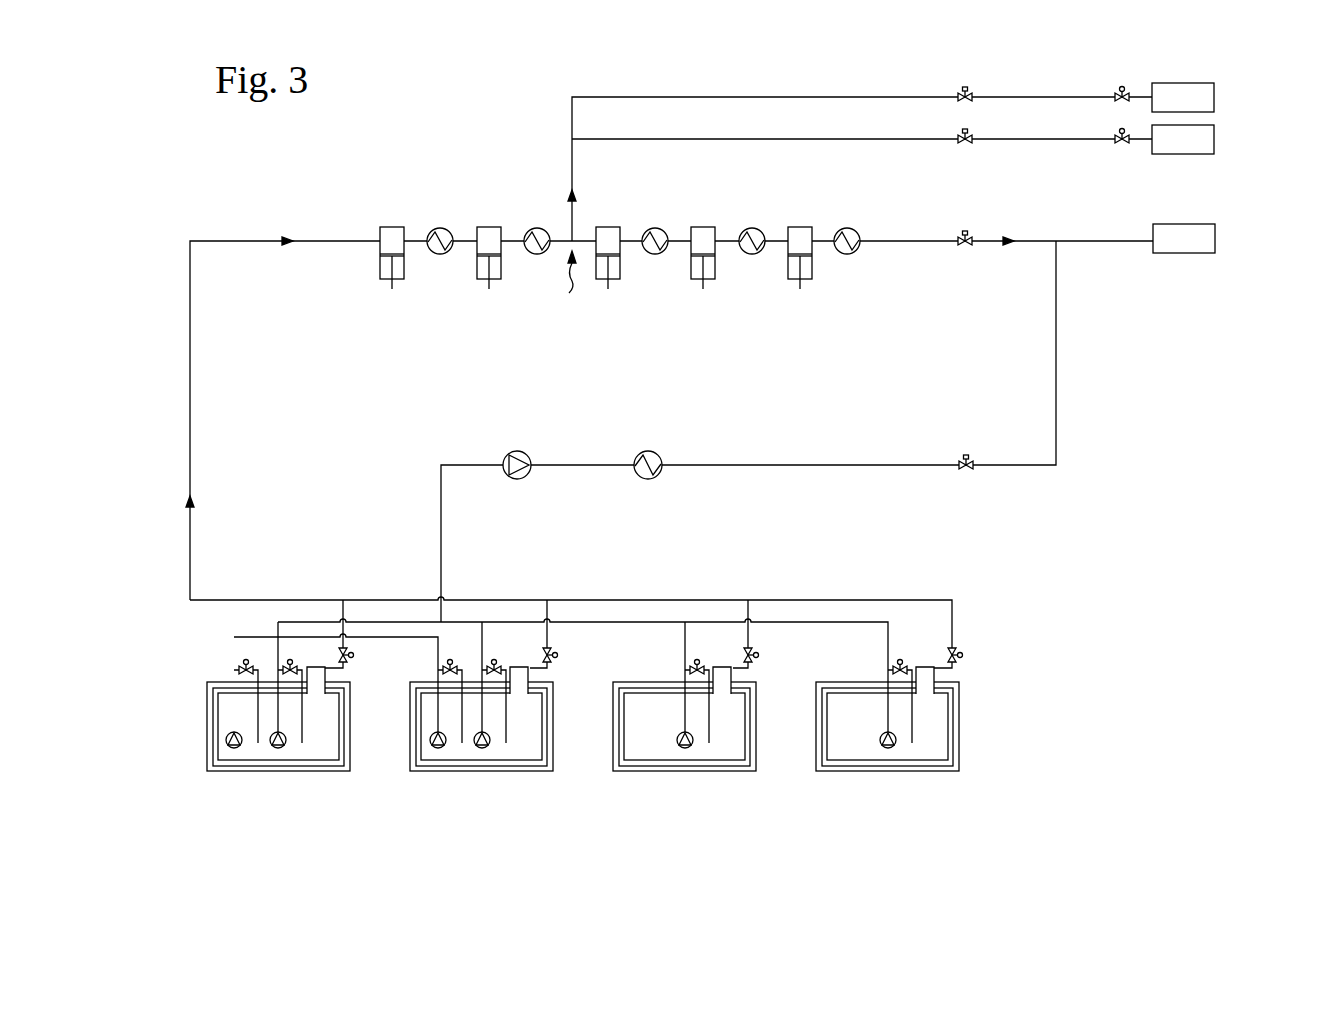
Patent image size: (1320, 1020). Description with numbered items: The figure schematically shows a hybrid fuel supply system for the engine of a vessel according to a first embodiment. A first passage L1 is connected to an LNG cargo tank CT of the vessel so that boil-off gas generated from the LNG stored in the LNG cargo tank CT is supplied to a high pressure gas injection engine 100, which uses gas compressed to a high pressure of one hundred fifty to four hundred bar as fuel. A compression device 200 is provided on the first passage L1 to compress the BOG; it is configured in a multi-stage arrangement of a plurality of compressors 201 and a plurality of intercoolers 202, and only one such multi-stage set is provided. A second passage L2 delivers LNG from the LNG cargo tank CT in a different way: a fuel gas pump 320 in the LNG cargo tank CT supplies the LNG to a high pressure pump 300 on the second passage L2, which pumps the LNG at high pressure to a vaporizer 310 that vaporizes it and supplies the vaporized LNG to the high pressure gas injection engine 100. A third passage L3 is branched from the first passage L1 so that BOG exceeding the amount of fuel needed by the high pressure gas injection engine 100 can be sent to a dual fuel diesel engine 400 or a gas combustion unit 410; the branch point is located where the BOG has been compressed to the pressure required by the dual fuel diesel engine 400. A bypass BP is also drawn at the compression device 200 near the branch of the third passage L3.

The high pressure gas injection engine 100 is at (1185, 253).
The compression device 200 is at (615, 301).
The compressor 201 is at (386, 281).
The intercooler 202 is at (440, 254).
The high pressure pump 300 is at (517, 451).
The vaporizer 310 is at (648, 451).
The fuel gas pump 320 is at (278, 748).
The dual fuel diesel engine 400 is at (1214, 139).
The GCU 410 is at (1214, 97).
The bypass line BP is at (570, 290).
The first passage L1 is at (190, 450).
The second passage L2 is at (814, 466).
The third passage L3 is at (572, 158).
The LNG cargo tank CT is at (207, 725).